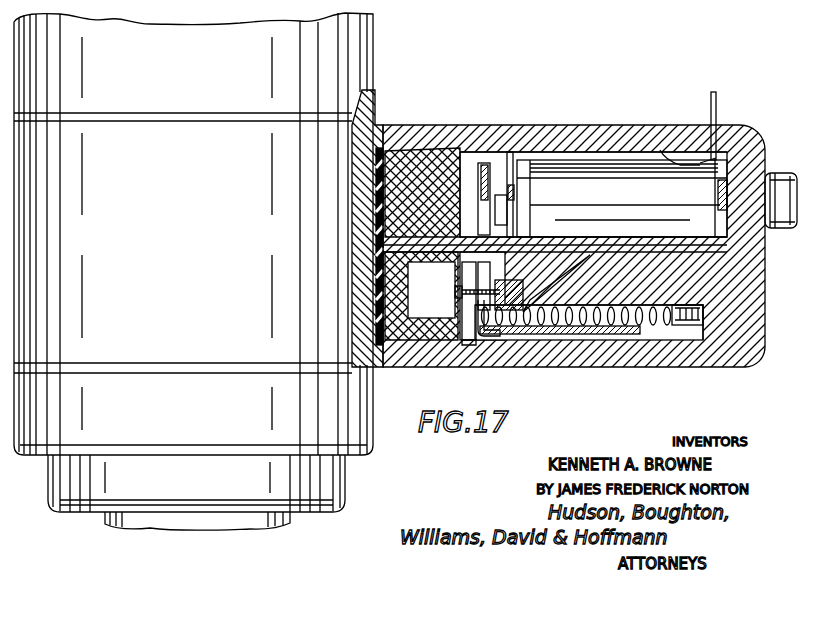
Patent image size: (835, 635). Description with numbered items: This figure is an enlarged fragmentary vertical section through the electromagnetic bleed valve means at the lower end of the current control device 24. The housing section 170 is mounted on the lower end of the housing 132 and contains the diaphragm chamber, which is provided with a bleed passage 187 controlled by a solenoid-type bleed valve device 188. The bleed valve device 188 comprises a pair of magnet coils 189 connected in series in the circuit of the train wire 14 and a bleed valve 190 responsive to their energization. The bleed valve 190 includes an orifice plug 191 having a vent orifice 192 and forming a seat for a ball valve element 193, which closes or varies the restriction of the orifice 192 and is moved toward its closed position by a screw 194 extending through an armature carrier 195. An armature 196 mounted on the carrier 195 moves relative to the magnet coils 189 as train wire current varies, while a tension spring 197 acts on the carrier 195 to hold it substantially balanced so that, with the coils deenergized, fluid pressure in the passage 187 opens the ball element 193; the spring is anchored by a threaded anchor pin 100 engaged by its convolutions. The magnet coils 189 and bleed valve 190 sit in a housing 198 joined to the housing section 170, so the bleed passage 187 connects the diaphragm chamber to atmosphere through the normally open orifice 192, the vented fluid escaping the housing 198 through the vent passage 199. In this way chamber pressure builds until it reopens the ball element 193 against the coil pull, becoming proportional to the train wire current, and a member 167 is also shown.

The current control device 24 is at (355, 68).
The housing 132 is at (357, 94).
The bleed passage 187 is at (372, 242).
The bleed valve device 188 is at (630, 108).
The housing section 170 is at (327, 352).
The cylinder 167 is at (517, 158).
The magnet coils 189 is at (550, 172).
The armature 196 is at (478, 160).
The housing 198 is at (664, 150).
The train wire 14 is at (718, 102).
The armature carrier 195 is at (455, 277).
The screw 194 is at (456, 306).
The vent orifice 192 is at (525, 272).
The orifice plug 191 is at (536, 303).
The tension spring 197 is at (593, 315).
The anchor pin 100 is at (709, 315).
The ball valve element 193 is at (497, 328).
The bleed valve 190 is at (523, 328).
The vent passage 199 is at (468, 345).